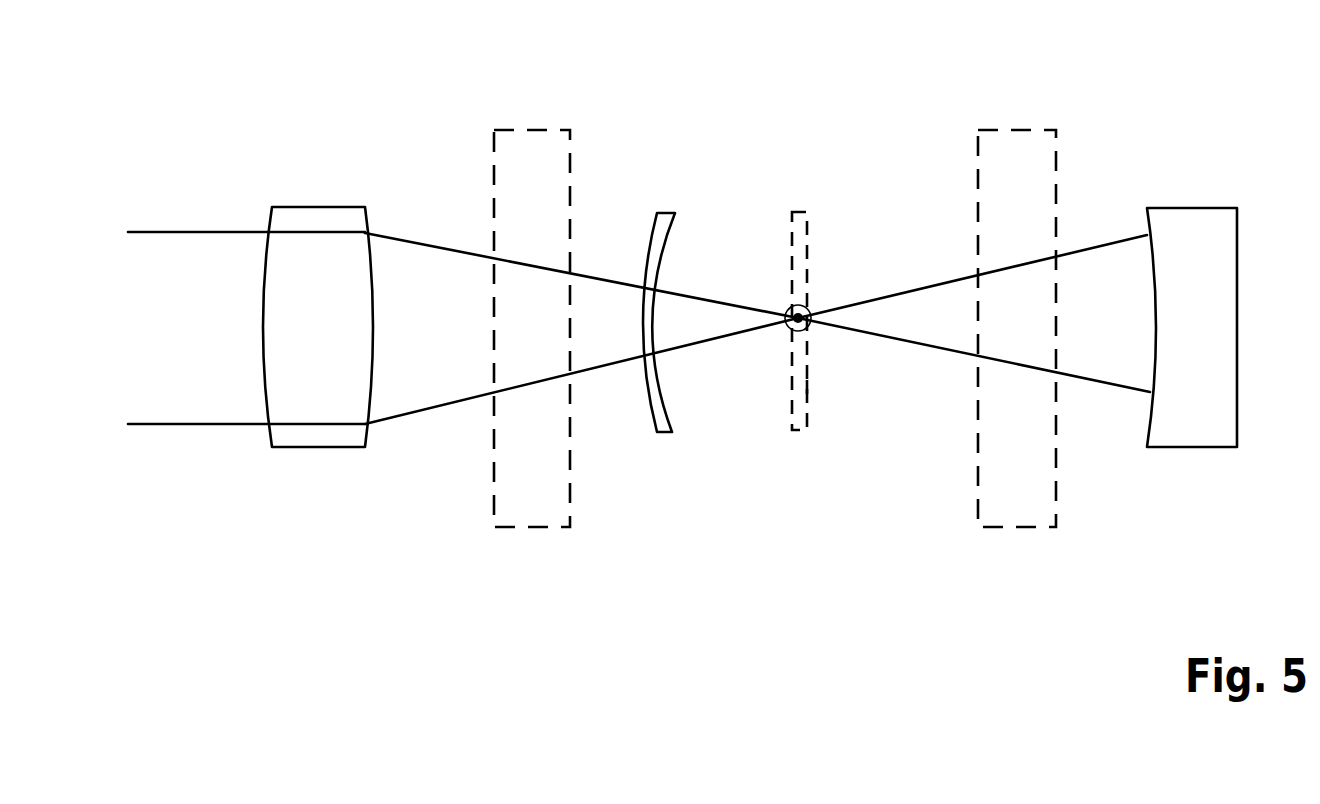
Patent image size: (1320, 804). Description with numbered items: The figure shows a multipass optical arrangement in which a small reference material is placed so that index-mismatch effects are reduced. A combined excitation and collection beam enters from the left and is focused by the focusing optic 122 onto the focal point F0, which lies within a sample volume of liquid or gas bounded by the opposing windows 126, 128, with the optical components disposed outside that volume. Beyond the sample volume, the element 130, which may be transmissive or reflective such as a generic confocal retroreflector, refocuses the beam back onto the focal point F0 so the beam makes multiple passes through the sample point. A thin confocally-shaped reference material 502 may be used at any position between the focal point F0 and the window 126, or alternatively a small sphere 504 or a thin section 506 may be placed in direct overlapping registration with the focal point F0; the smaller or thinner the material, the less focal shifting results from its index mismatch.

The focusing optic 122 is at (302, 207).
The window 126 is at (521, 130).
The thin confocally-shaped reference material 502 is at (668, 206).
The small sphere 504 is at (815, 253).
The focal point F0 is at (793, 325).
The thin section 506 is at (808, 387).
The window 128 is at (1013, 130).
The element 130 is at (1188, 207).